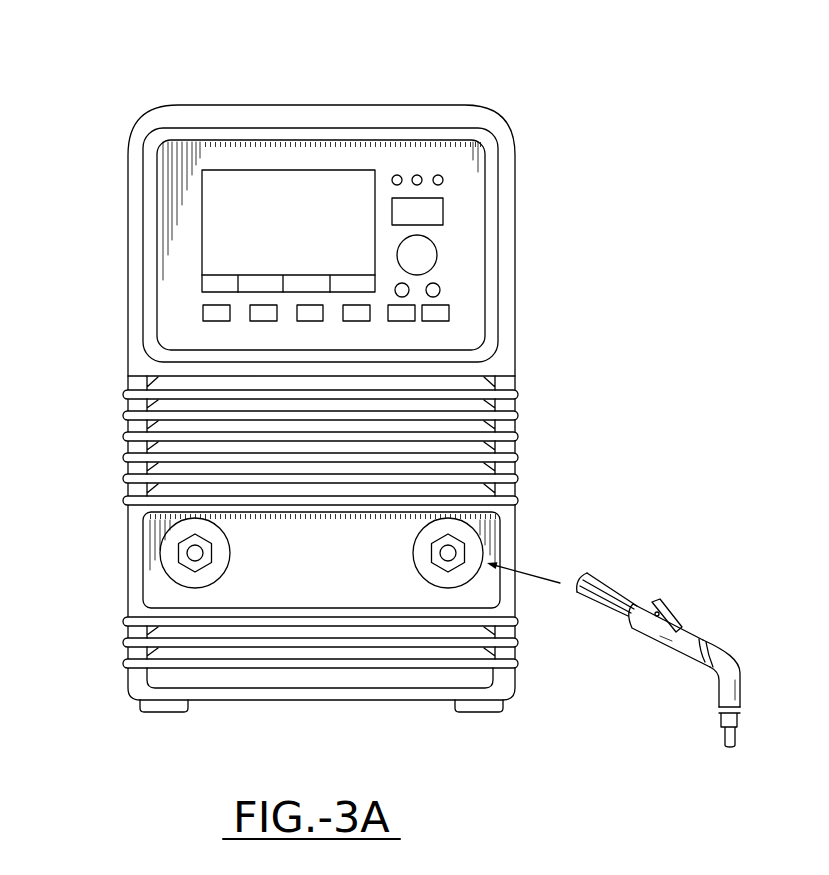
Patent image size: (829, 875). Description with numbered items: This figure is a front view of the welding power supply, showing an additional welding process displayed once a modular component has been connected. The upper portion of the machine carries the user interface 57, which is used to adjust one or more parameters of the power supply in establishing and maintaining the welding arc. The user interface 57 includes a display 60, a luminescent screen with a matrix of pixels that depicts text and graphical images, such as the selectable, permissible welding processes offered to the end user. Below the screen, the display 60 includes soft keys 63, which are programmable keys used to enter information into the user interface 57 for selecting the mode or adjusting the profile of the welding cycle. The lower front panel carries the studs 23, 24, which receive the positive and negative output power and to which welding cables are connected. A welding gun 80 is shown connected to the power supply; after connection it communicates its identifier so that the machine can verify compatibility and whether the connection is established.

The user interface 57 is at (413, 152).
The display 60 is at (320, 200).
The soft keys 63 is at (263, 308).
The stud 23 is at (190, 550).
The stud 24 is at (460, 555).
The welding gun 80 is at (678, 617).